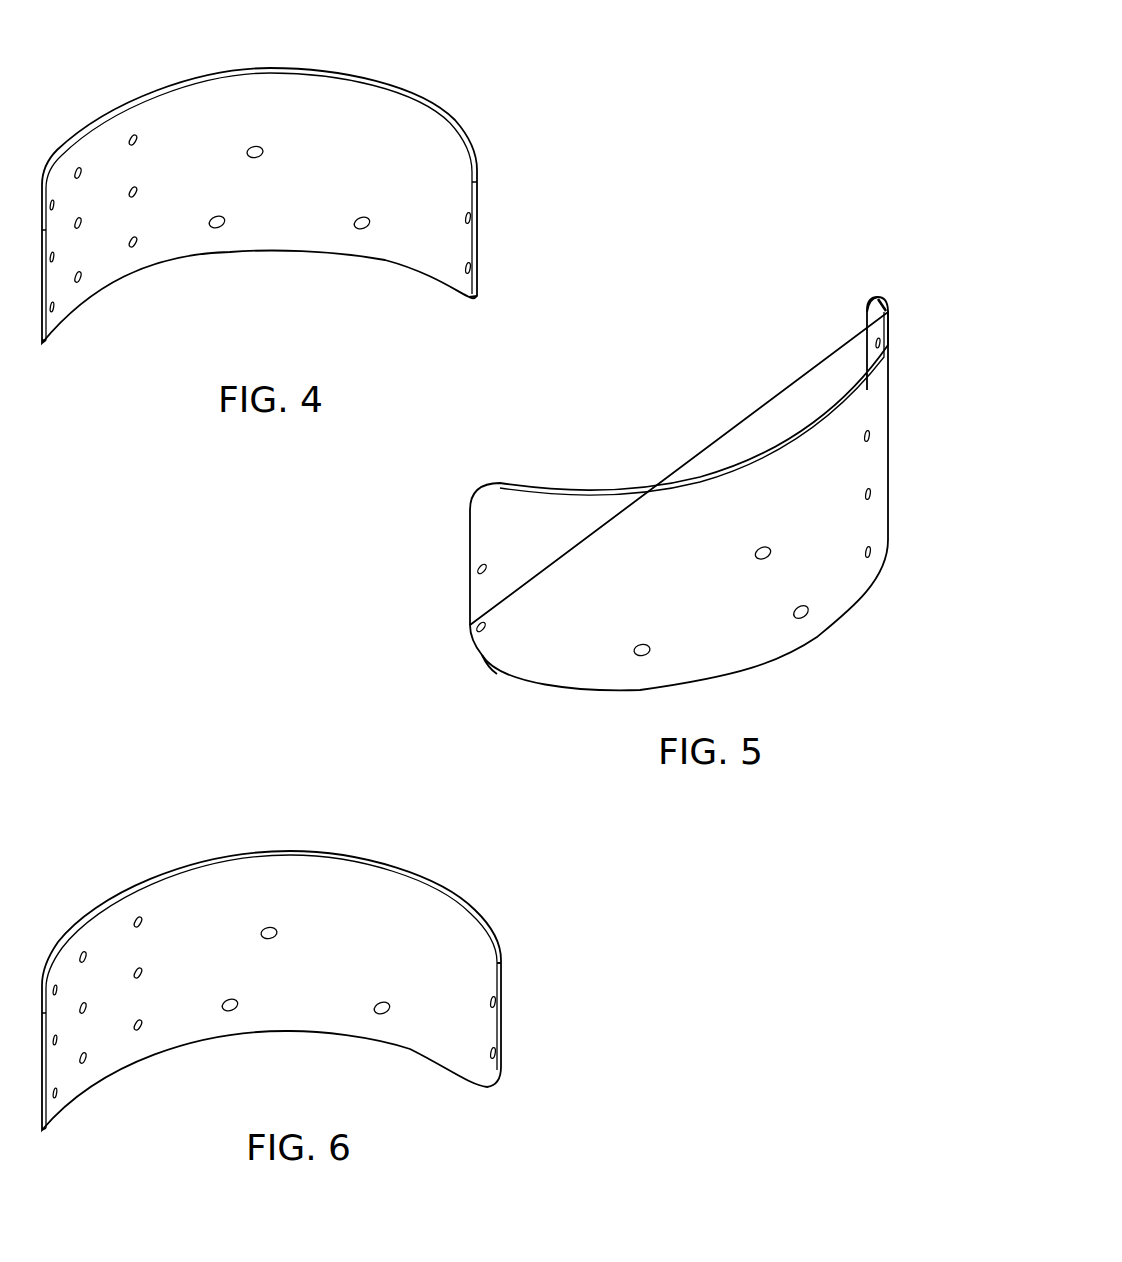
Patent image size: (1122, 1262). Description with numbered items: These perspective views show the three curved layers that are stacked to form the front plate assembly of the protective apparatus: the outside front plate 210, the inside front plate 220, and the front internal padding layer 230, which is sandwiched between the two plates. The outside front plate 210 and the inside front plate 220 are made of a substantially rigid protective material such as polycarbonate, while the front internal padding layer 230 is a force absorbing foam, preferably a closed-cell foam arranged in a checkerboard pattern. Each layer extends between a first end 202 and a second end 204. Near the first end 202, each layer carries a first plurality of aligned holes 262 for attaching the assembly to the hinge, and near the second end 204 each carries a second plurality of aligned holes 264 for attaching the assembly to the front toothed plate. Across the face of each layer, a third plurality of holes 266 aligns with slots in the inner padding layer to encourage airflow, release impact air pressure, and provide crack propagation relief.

In FIG. 4, the first end 202 is at (466, 303).
In FIG. 5, the first end 202 is at (489, 684).
In FIG. 6, the first end 202 is at (513, 964).
In FIG. 4, the second end 204 is at (46, 352).
In FIG. 5, the second end 204 is at (878, 290).
In FIG. 6, the second end 204 is at (76, 1121).
In FIG. 4, the outside front plate 210 is at (370, 110).
In FIG. 5, the inside front plate 220 is at (748, 491).
In FIG. 6, the front internal padding layer 230 is at (228, 880).
In FIG. 4, the first plurality of aligned holes 262 is at (472, 218).
In FIG. 5, the first plurality of aligned holes 262 is at (478, 629).
In FIG. 6, the first plurality of aligned holes 262 is at (496, 1050).
In FIG. 4, the second plurality of aligned holes 264 is at (134, 135).
In FIG. 5, the second plurality of aligned holes 264 is at (865, 430).
In FIG. 6, the second plurality of aligned holes 264 is at (138, 916).
In FIG. 4, the third plurality of holes 266 is at (256, 146).
In FIG. 5, the third plurality of holes 266 is at (805, 618).
In FIG. 6, the third plurality of holes 266 is at (234, 1011).